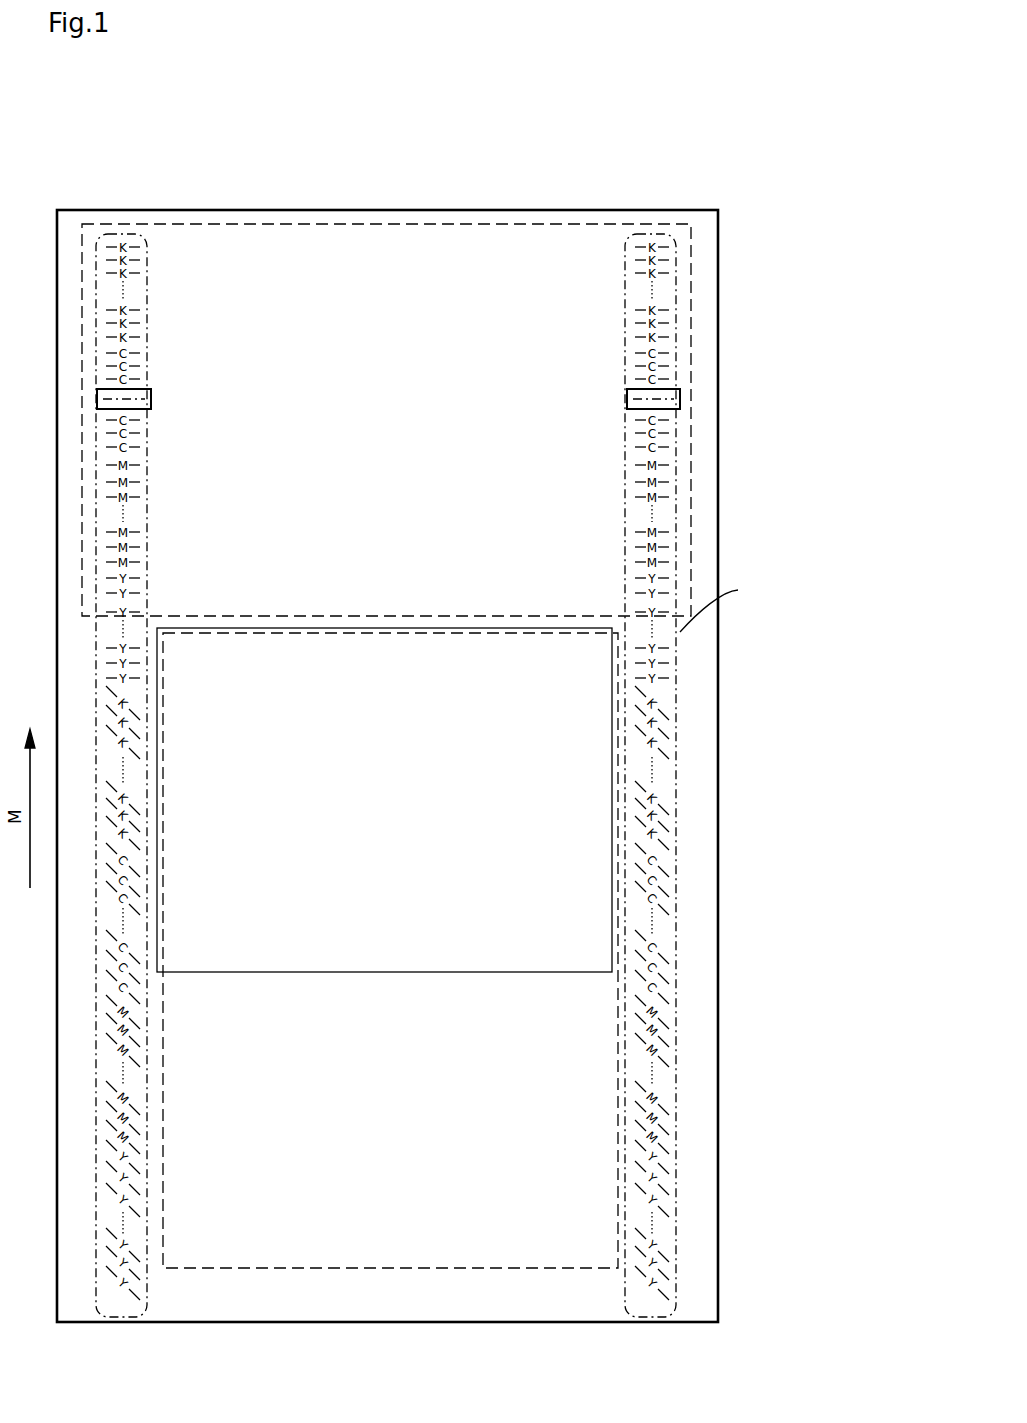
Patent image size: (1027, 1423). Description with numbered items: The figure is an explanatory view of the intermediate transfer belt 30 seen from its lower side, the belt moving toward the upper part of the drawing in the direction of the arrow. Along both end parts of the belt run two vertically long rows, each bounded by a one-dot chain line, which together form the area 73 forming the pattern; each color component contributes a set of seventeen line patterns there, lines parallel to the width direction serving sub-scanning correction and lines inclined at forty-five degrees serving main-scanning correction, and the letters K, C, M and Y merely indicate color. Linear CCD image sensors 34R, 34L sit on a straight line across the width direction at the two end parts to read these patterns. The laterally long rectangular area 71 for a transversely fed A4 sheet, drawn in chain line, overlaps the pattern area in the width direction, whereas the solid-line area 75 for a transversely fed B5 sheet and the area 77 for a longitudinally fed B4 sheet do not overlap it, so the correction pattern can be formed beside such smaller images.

The intermediate transfer belt 30 is at (700, 218).
The area forming the pattern 73 is at (136, 230).
The CCD image sensor 34R is at (150, 390).
The left pattern detection sensor 34L is at (675, 398).
The laterally long rectangular area 71 is at (432, 453).
The area forming the image 75 is at (432, 833).
The image forming area for short edge (portrait) feed of B4 size 77 is at (442, 1145).